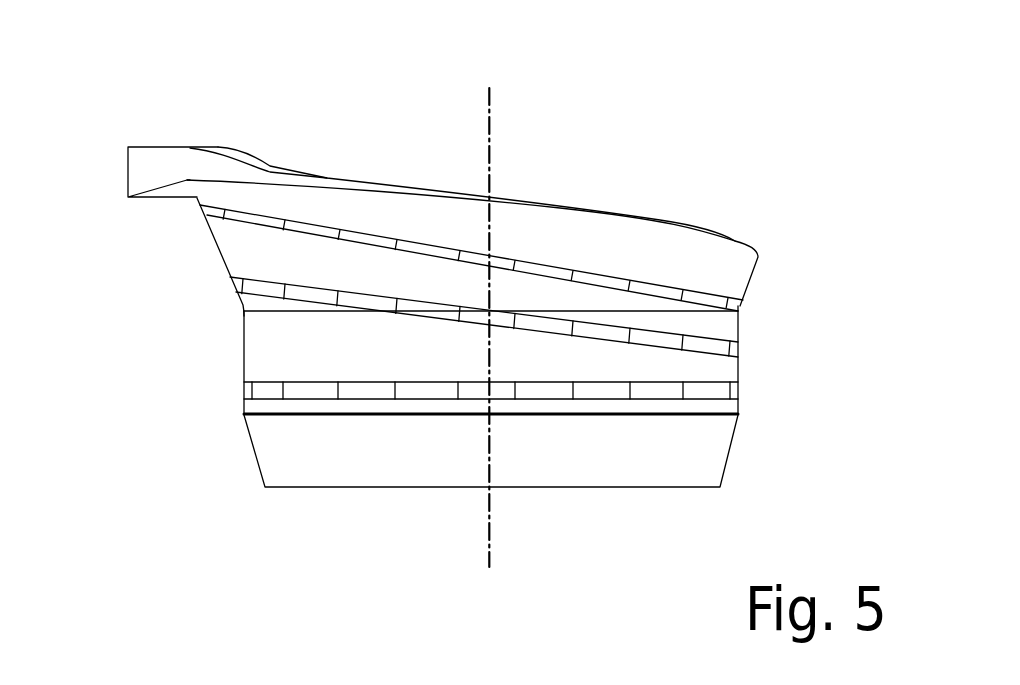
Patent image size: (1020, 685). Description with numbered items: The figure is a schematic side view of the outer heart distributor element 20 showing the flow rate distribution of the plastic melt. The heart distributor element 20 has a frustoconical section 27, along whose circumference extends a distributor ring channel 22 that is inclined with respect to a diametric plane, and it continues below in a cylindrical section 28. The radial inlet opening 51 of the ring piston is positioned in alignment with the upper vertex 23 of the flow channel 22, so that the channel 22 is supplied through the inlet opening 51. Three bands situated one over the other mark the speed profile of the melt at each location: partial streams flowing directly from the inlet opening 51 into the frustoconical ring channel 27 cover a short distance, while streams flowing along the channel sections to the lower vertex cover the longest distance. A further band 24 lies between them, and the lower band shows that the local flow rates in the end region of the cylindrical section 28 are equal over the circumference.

The heart distributor element 20 is at (447, 249).
The distributor ring channel 22 is at (420, 210).
The upper vertex 23 is at (213, 180).
The lower segment layer 24 is at (738, 302).
The frustoconical section 27 is at (238, 248).
The cylindrical section 28 is at (275, 363).
The radial inlet opening 51 is at (151, 163).